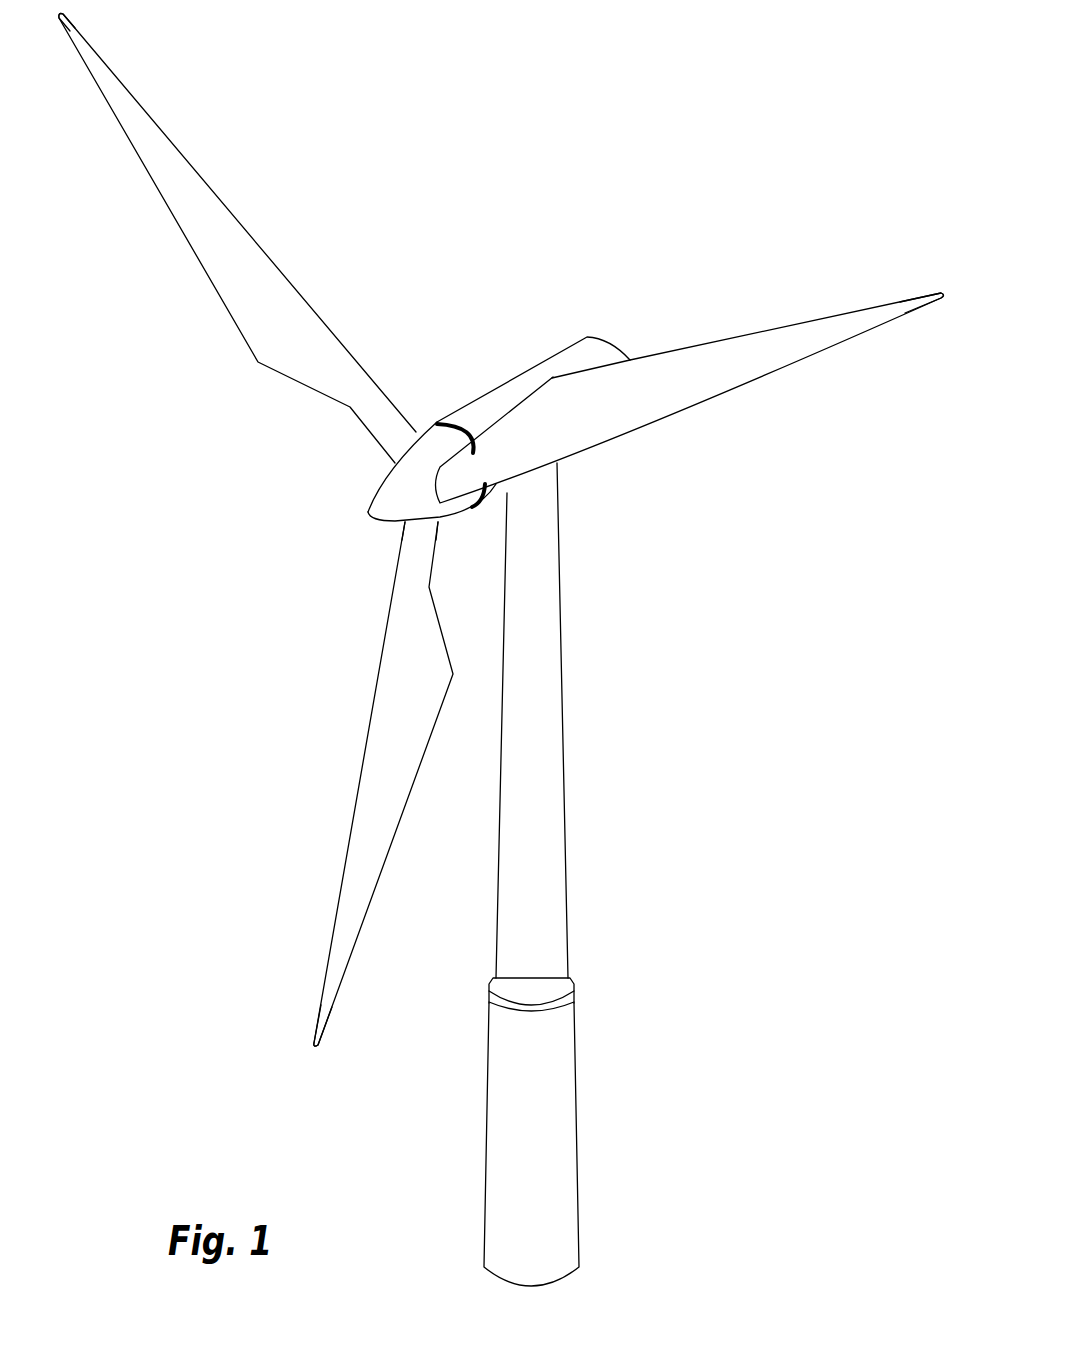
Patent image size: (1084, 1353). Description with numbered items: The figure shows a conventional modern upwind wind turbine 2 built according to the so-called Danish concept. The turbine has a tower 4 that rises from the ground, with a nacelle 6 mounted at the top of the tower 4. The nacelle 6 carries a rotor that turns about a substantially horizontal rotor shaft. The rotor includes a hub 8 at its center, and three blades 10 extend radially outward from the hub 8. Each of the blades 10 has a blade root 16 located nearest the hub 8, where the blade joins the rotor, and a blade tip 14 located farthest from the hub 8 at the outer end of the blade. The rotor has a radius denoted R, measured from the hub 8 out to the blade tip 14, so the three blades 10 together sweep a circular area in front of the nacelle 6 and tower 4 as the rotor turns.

The wind turbine 2 is at (672, 809).
The tower 4 is at (551, 726).
The nacelle 6 is at (493, 405).
The hub 8 is at (394, 496).
The blade 10 is at (273, 335).
The blade tip 14 is at (107, 76).
The blade root 16 is at (400, 447).